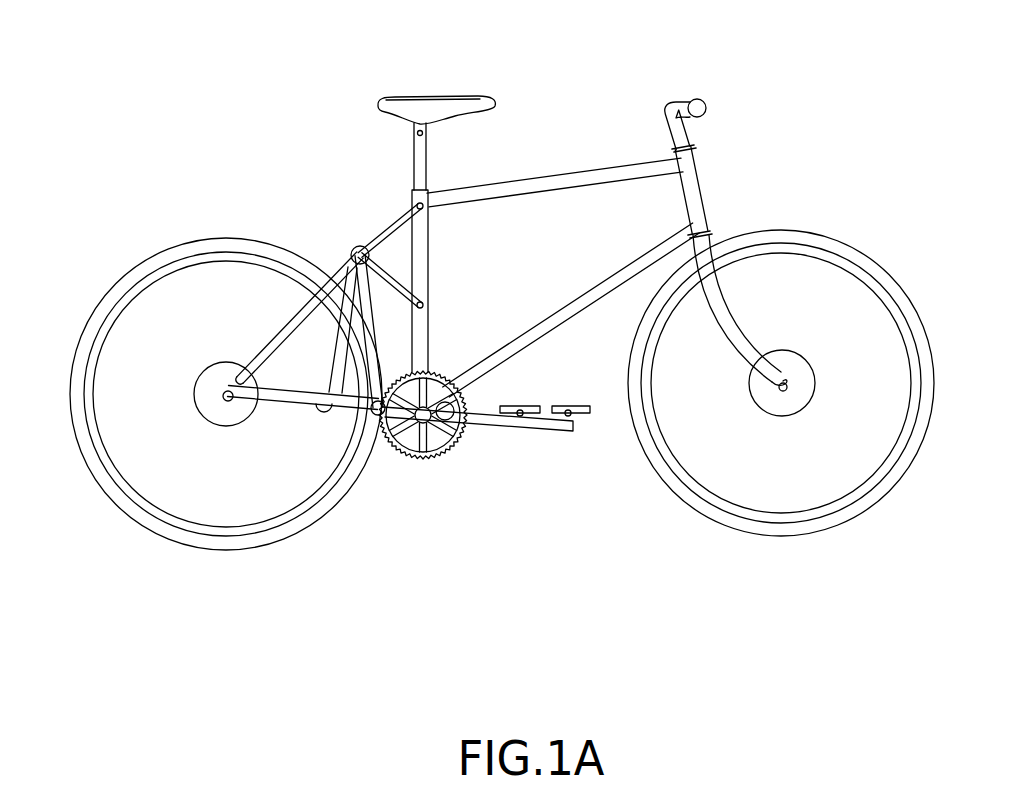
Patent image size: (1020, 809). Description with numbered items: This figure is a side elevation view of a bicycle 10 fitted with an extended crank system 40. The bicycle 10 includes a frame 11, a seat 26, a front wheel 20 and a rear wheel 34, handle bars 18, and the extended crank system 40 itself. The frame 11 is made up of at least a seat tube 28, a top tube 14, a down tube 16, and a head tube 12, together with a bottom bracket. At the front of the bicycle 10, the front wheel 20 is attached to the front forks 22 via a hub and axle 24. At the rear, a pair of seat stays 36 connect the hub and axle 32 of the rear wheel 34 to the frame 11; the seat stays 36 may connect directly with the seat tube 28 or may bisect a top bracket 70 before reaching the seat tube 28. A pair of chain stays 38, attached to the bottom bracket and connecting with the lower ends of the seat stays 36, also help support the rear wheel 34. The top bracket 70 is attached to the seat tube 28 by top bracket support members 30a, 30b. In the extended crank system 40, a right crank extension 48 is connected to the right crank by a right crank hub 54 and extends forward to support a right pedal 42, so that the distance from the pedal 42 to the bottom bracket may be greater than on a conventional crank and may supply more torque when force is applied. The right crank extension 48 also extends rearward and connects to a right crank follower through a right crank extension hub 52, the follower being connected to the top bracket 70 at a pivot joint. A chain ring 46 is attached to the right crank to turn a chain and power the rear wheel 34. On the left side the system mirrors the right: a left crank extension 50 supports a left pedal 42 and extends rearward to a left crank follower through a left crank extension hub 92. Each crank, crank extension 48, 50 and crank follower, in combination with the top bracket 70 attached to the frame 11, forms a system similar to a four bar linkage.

The bicycle 10 is at (806, 104).
The frame 11 is at (522, 140).
The head tube 12 is at (703, 185).
The top tube 14 is at (577, 160).
The down tube 16 is at (556, 297).
The handle bars 18 is at (696, 99).
The front wheel 20 is at (845, 247).
The front forks 22 is at (768, 388).
The hub and axle 24 is at (797, 364).
The seat 26 is at (423, 97).
The seat tube 28 is at (410, 197).
The top bracket support member 30a is at (384, 232).
The top bracket support member 30b is at (390, 278).
The hub and axle 32 is at (212, 410).
The rear wheel 34 is at (155, 531).
The seat stays 36 is at (246, 366).
The chain stays 38 is at (257, 398).
The extended crank system 40 is at (432, 475).
The pedal 42 is at (550, 406).
The chain ring 46 is at (445, 370).
The right crank extension 48 is at (511, 432).
The left crank extension 50 is at (500, 405).
The right crank extension hub 52 is at (378, 415).
The right crank hub 54 is at (448, 418).
The top bracket 70 is at (349, 252).
The left crank extension hub 92 is at (318, 416).